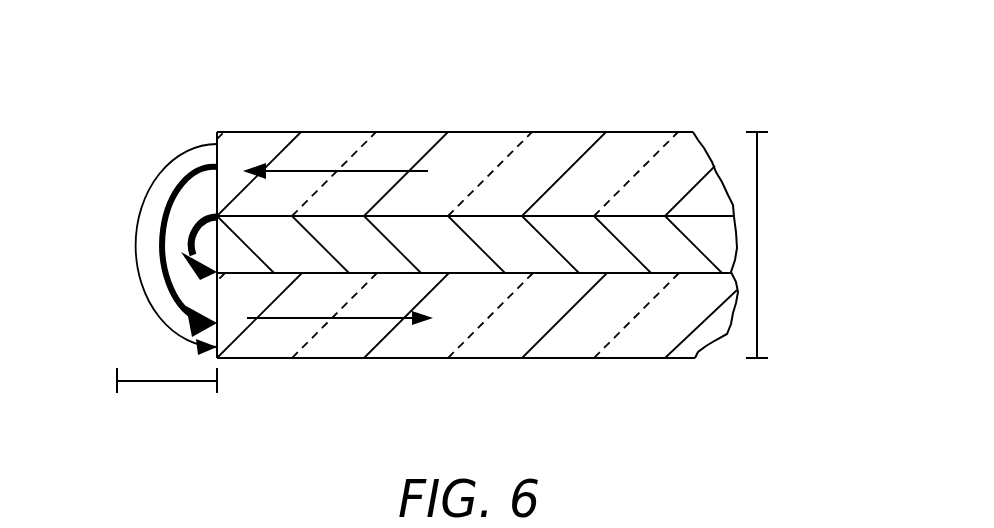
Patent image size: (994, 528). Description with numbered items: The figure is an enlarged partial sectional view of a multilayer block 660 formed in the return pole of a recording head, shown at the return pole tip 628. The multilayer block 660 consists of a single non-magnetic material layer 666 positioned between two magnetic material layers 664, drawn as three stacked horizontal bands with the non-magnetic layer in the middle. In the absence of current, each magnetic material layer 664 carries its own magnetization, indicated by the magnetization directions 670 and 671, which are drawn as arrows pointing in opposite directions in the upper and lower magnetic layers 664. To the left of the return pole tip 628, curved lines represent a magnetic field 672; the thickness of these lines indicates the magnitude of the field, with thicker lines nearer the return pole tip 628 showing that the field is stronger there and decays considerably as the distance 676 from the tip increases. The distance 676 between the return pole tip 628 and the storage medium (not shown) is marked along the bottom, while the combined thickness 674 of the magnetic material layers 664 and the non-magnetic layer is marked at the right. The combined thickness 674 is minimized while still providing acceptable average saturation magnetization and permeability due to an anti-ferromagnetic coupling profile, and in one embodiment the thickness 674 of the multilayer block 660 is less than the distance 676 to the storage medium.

The multilayer block 660 is at (826, 157).
The return pole tip 628 is at (217, 136).
The magnetic material layers 664 is at (535, 160).
The non-magnetic material layer 666 is at (642, 245).
The magnetization direction 670 is at (305, 168).
The magnetization direction 671 is at (360, 320).
The magnetic field 672 is at (116, 225).
The combined thickness 674 is at (758, 215).
The distance 676 is at (170, 382).